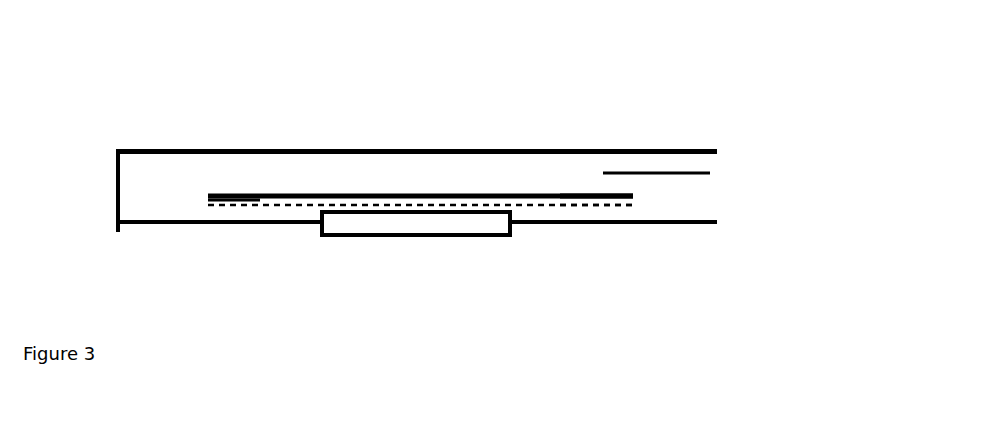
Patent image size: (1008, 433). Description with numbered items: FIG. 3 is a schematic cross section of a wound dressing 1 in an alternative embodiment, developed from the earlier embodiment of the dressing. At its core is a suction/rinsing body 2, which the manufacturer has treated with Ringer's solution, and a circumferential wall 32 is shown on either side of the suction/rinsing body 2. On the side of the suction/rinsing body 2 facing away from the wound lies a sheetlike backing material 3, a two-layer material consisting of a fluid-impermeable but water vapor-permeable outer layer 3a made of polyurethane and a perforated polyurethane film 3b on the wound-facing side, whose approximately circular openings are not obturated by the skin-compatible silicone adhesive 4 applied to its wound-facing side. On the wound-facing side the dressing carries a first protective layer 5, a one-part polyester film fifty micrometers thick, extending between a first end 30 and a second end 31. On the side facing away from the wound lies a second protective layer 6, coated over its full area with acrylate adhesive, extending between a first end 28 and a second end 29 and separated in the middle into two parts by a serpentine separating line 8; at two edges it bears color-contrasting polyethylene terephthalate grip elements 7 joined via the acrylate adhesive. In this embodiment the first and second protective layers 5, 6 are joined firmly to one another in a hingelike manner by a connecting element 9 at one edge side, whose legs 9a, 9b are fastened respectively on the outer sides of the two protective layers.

The wound dressing 1 is at (645, 121).
The suction/rinsing body 2 is at (495, 223).
The sheetlike backing material 3 is at (640, 199).
The outer layer 3a is at (633, 196).
The perforated polyurethane film 3b is at (600, 200).
The skin-compatible silicone adhesive 4 is at (228, 207).
The first protective layer 5 is at (173, 227).
The second protective layer 6 is at (703, 150).
The grip elements 7 is at (710, 173).
The serpentine separating line 8 is at (410, 153).
The connecting element 9 is at (116, 183).
The leg of connecting element 9a is at (131, 148).
The leg of connecting element 9b is at (142, 236).
The first end of second protective layer 28 is at (165, 151).
The second end of second protective layer 29 is at (687, 149).
The first end of first protective layer 30 is at (157, 231).
The second end of first protective layer 31 is at (707, 228).
The circumferential wall 32 is at (520, 230).